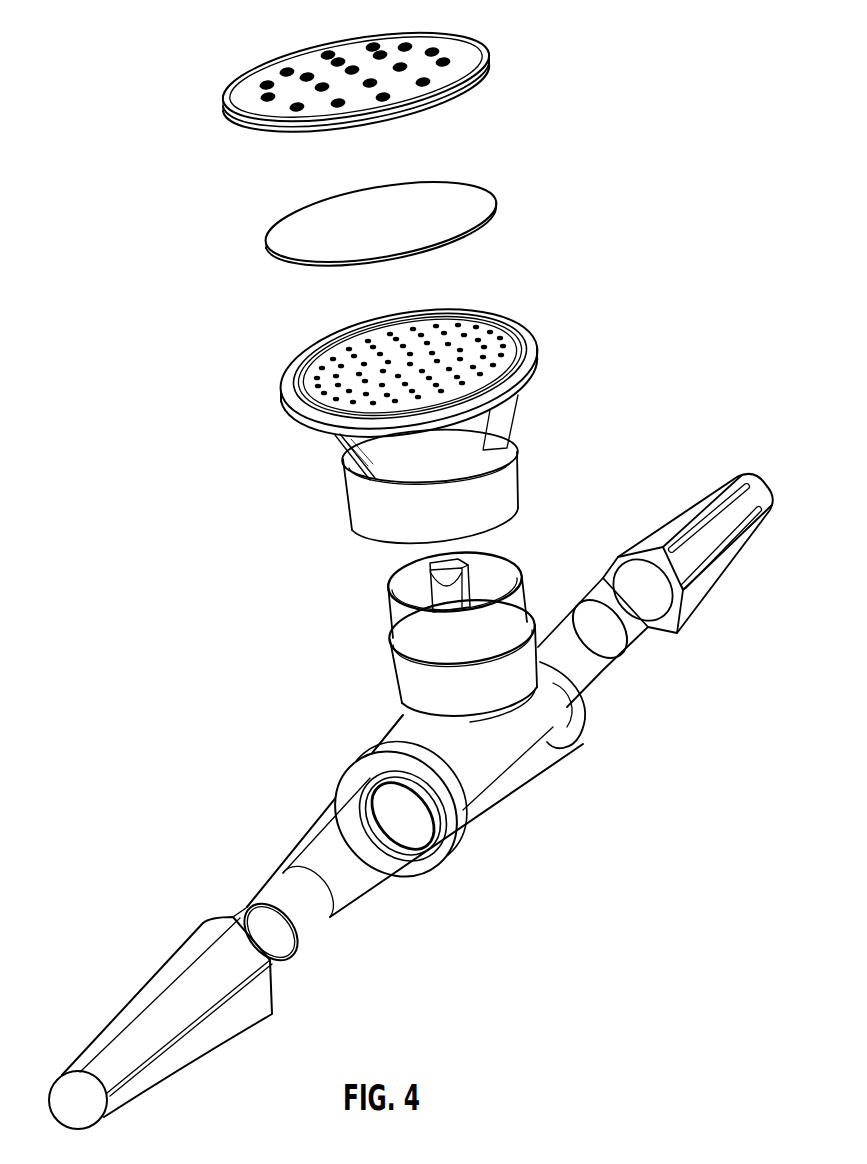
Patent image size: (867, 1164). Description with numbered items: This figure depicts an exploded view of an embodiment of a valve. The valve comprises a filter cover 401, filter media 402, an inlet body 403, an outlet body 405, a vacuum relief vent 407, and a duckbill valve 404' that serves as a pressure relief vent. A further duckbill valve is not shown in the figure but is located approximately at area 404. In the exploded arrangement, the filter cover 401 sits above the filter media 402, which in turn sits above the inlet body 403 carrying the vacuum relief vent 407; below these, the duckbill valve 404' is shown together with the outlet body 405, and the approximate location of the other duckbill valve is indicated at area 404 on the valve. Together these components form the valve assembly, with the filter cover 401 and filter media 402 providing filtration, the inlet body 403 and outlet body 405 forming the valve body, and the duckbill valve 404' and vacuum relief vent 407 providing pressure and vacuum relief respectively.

The filter cover 401 is at (490, 50).
The filter media 402 is at (493, 198).
The inlet body 403 is at (540, 352).
The vacuum relief vent 407 is at (378, 377).
The duckbill valve 404' is at (499, 566).
The outlet body 405 is at (507, 605).
The area of duckbill valve 404 is at (411, 801).